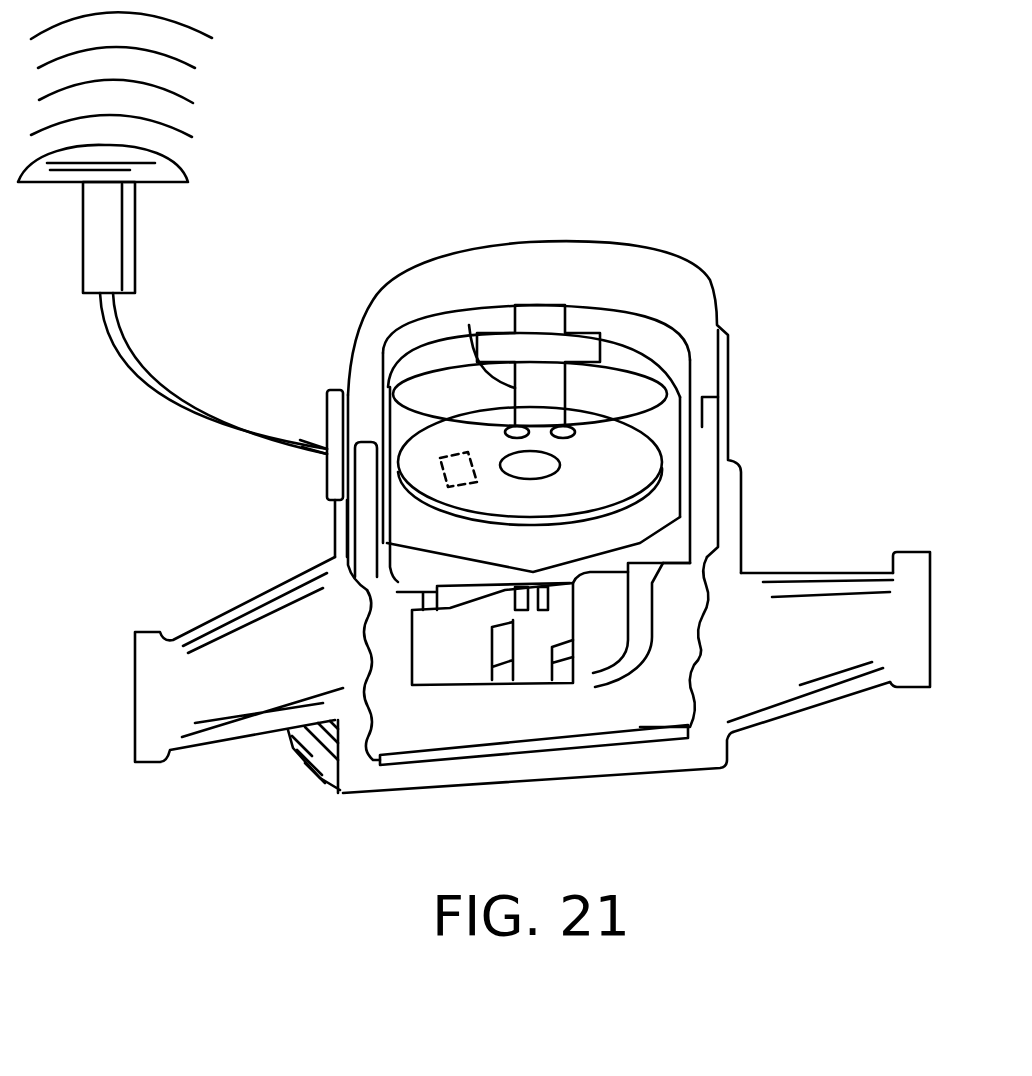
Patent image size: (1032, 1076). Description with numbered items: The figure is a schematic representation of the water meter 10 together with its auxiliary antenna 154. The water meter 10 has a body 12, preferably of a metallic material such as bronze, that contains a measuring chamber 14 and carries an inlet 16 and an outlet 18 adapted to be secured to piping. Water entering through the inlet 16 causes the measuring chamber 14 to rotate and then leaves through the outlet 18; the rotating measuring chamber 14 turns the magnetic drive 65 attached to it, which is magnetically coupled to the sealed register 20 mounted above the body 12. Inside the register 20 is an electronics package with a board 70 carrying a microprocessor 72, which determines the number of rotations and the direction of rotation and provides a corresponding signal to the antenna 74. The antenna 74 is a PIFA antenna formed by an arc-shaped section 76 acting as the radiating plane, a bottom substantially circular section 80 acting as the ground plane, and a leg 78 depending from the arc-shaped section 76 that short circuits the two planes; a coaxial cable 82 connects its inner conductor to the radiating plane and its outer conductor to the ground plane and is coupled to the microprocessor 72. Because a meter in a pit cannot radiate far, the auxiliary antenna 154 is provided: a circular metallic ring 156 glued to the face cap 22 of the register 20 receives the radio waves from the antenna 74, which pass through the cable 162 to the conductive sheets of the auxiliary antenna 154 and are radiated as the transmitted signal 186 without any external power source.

The water meter 10 is at (388, 795).
The body 12 is at (763, 723).
The measuring chamber 14 is at (593, 662).
The inlet 16 is at (230, 740).
The outlet 18 is at (853, 572).
The register 20 is at (680, 470).
The face cap 22 is at (340, 388).
The magnetic drive 65 is at (573, 603).
The board 70 is at (387, 507).
The microprocessor 72 is at (448, 490).
The antenna 74 is at (730, 395).
The arc-shaped section 76 is at (637, 367).
The leg 78 is at (469, 325).
The circular section 80 is at (570, 507).
The coaxial cable 82 is at (565, 388).
The auxiliary antenna 154 is at (133, 249).
The circular metallic ring 156 is at (327, 477).
The cable 162 is at (247, 383).
The signal 186 is at (192, 100).